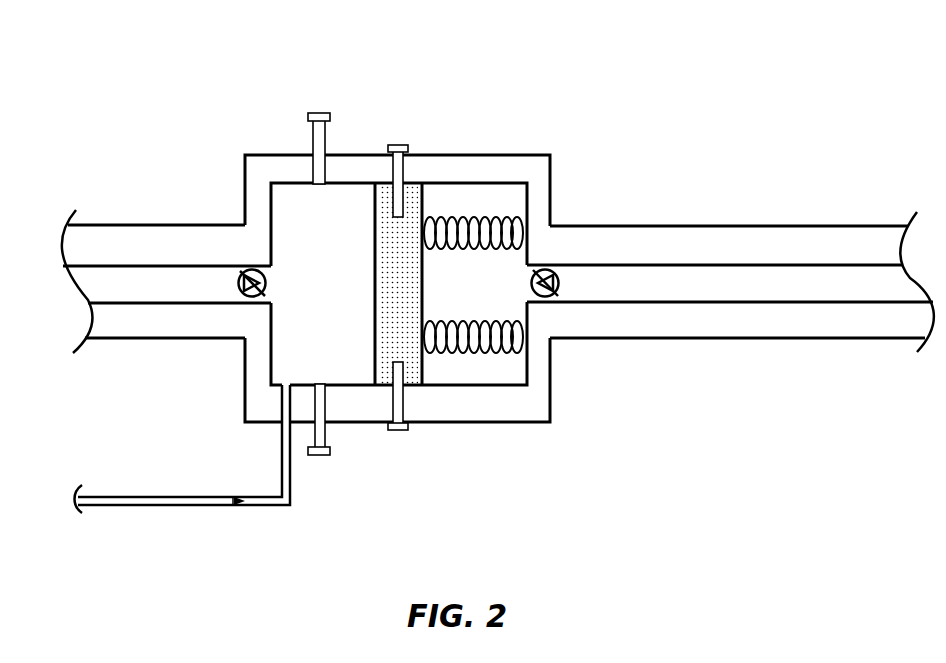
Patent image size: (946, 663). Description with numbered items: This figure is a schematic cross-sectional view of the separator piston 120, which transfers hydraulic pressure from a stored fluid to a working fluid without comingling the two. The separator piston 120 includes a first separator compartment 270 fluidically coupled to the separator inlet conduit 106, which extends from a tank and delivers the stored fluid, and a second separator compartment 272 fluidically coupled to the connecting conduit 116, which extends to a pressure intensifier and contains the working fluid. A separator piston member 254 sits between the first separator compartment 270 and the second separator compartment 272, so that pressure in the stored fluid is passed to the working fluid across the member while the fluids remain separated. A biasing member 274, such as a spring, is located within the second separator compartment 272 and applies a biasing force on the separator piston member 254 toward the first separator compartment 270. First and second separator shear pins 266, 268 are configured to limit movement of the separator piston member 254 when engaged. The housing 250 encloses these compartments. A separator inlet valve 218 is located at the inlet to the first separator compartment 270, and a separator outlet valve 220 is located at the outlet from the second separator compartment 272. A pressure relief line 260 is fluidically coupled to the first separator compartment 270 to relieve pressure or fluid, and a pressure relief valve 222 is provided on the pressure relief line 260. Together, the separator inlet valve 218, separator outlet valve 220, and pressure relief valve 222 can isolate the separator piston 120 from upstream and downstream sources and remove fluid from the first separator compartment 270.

The separator inlet conduit 106 is at (139, 305).
The connecting conduit 116 is at (695, 265).
The separator piston 120 is at (772, 105).
The separator inlet valve 218 is at (252, 269).
The separator outlet valve 220 is at (547, 270).
The pressure relief valve 222 is at (240, 496).
The housing 250 is at (347, 175).
The separator piston member 254 is at (410, 340).
The pressure relief line 260 is at (148, 496).
The first separator shear pin 266 is at (320, 113).
The second separator shear pin 268 is at (398, 145).
The first separator compartment 270 is at (345, 368).
The second separator compartment 272 is at (483, 368).
The biasing member 274 is at (470, 216).